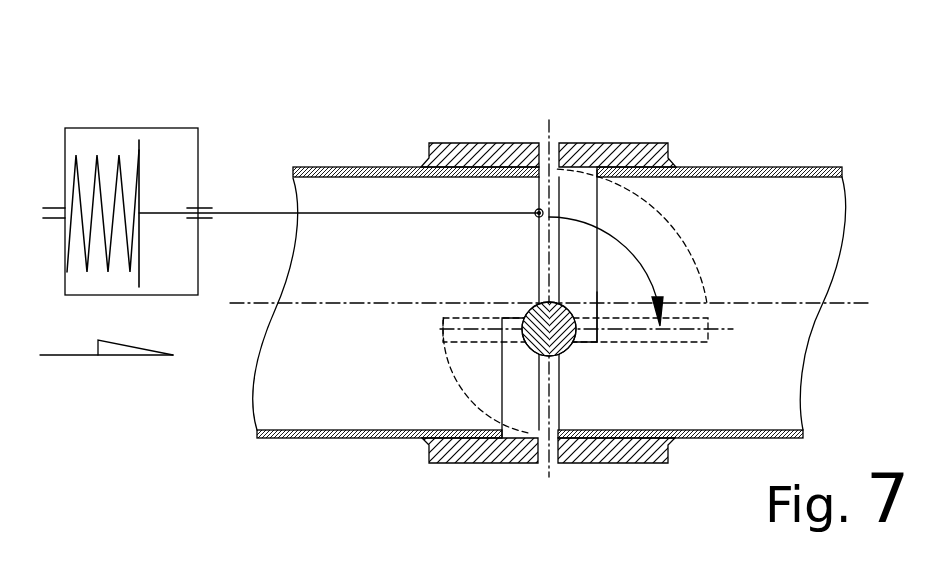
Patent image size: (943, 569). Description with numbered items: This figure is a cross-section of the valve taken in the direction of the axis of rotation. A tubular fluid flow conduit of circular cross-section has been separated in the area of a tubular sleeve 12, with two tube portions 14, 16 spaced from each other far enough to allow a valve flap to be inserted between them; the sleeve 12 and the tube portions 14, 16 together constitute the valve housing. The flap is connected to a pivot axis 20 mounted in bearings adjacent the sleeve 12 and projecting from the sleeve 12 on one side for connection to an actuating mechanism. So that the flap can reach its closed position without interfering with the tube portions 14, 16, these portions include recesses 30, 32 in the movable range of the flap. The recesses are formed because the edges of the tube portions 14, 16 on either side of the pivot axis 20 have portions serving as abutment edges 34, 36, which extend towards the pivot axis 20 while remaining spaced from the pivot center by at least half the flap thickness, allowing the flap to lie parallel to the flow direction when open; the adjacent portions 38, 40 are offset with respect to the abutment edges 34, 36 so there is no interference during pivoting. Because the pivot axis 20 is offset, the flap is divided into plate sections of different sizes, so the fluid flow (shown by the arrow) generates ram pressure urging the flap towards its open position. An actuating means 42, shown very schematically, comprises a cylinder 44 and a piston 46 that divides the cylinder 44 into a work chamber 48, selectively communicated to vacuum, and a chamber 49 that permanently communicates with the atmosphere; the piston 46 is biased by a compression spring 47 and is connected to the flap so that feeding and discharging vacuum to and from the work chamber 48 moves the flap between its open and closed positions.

The tubular sleeve 12 is at (633, 143).
The tube portion 14 is at (330, 168).
The tube portion 16 is at (742, 165).
The pivot axis 20 is at (560, 345).
The recess 30 is at (515, 398).
The recess 32 is at (575, 210).
The abutment edge 34 is at (537, 244).
The abutment edge 36 is at (560, 403).
The adjacent portion 38 is at (510, 432).
The adjacent portion 40 is at (597, 292).
The actuating means 42 is at (190, 104).
The cylinder 44 is at (117, 128).
The piston 46 is at (139, 260).
The compression spring 47 is at (86, 253).
The work chamber 48 is at (82, 145).
The chamber 49 is at (176, 160).